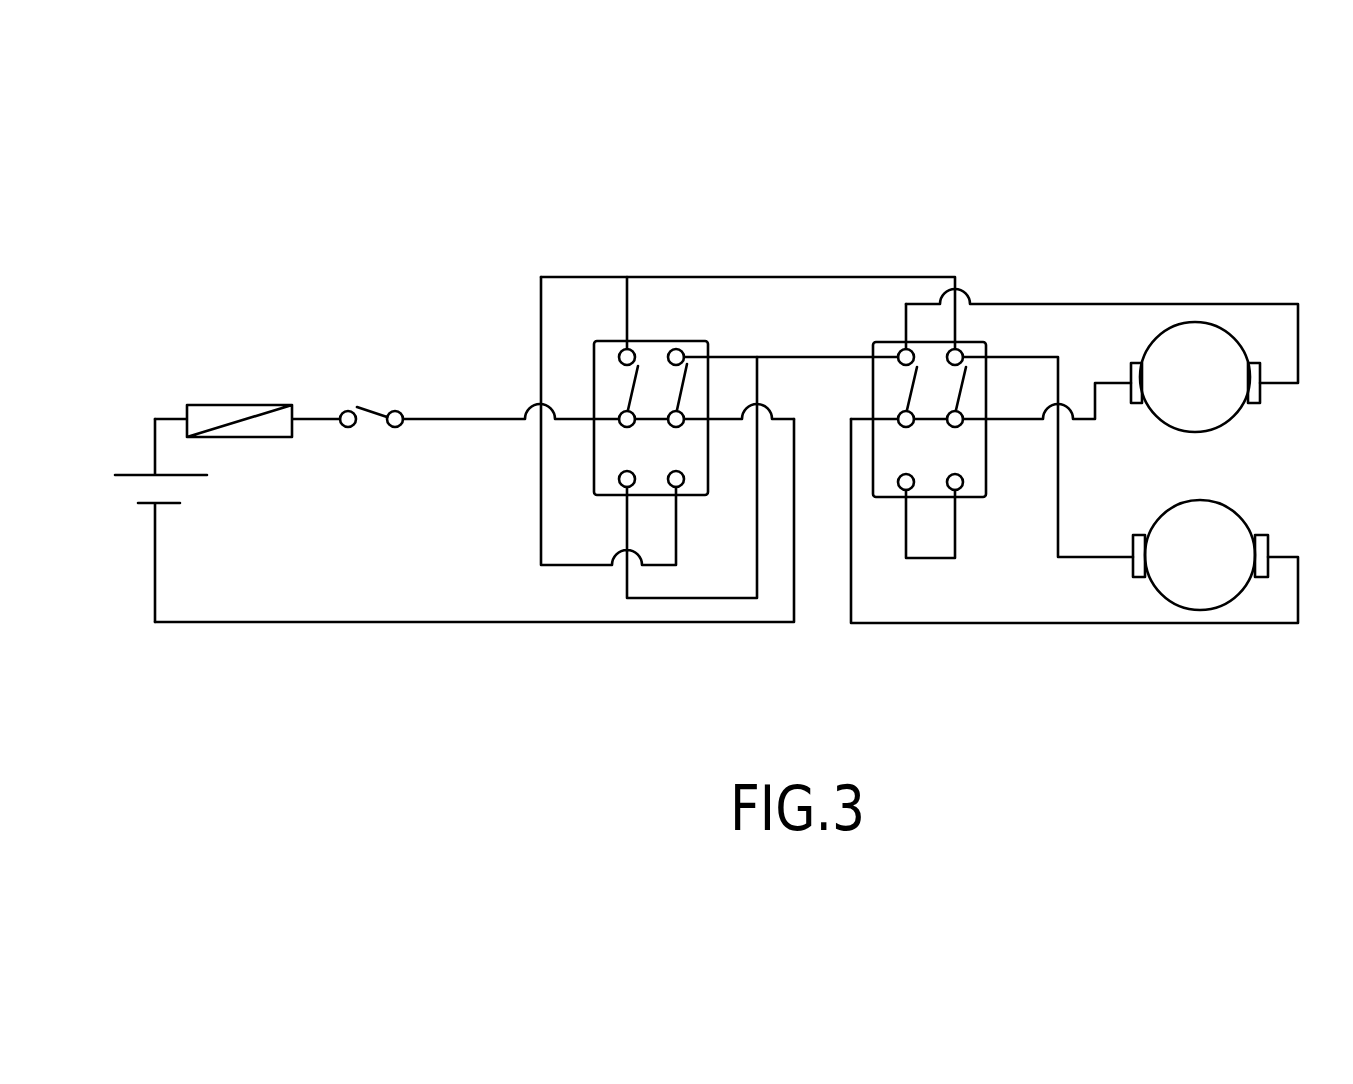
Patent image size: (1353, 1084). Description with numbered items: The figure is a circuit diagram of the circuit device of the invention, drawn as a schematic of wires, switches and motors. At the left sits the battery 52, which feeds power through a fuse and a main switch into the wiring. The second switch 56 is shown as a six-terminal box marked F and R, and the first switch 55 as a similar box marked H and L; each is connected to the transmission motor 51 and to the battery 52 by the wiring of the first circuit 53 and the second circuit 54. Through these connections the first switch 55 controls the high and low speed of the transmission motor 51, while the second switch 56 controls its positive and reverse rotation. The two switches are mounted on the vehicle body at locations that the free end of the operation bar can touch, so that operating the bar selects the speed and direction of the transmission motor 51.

The transmission motor 51 is at (1240, 511).
The battery 52 is at (178, 505).
The first circuit 53 is at (1108, 304).
The second circuit 54 is at (690, 277).
The first switch 55 is at (970, 352).
The second switch 56 is at (605, 367).